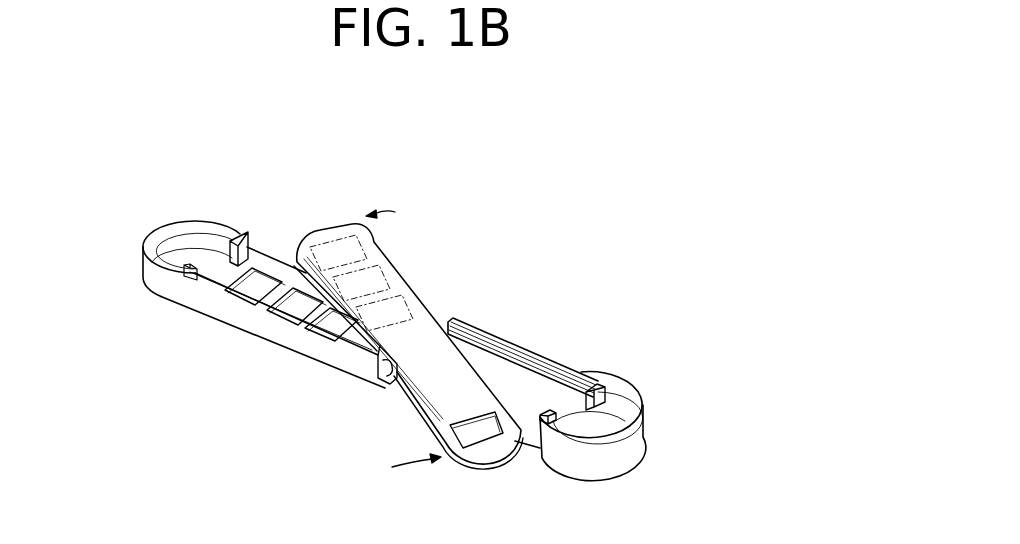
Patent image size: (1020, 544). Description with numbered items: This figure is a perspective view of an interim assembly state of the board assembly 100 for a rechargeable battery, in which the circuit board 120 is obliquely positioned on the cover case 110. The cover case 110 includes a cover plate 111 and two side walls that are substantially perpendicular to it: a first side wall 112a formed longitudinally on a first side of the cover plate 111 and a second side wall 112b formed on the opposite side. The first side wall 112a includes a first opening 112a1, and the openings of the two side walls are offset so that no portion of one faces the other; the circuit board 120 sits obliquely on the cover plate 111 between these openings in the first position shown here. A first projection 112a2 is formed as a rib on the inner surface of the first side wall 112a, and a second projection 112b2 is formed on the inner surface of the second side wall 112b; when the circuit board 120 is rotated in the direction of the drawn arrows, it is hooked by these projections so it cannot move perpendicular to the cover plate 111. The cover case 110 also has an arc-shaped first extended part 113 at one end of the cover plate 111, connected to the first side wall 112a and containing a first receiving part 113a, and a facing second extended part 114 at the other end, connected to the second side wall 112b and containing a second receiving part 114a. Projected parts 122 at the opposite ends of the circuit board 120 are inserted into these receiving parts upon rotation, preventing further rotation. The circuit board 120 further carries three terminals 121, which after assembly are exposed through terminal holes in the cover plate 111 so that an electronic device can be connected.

The board assembly 100 is at (597, 187).
The cover case 110 is at (567, 352).
The cover plate 111 is at (521, 398).
The first side wall 112a is at (513, 343).
The first opening 112a1 is at (260, 252).
The first projection 112a2 is at (470, 327).
The second side wall 112b is at (280, 330).
The second projection 112b2 is at (387, 367).
The first extended part 113 is at (646, 426).
The first receiving part 113a is at (572, 414).
The second extended part 114 is at (157, 226).
The second receiving part 114a is at (212, 267).
The circuit board 120 is at (347, 229).
The terminals 121 is at (406, 302).
The projected parts 122 is at (484, 462).